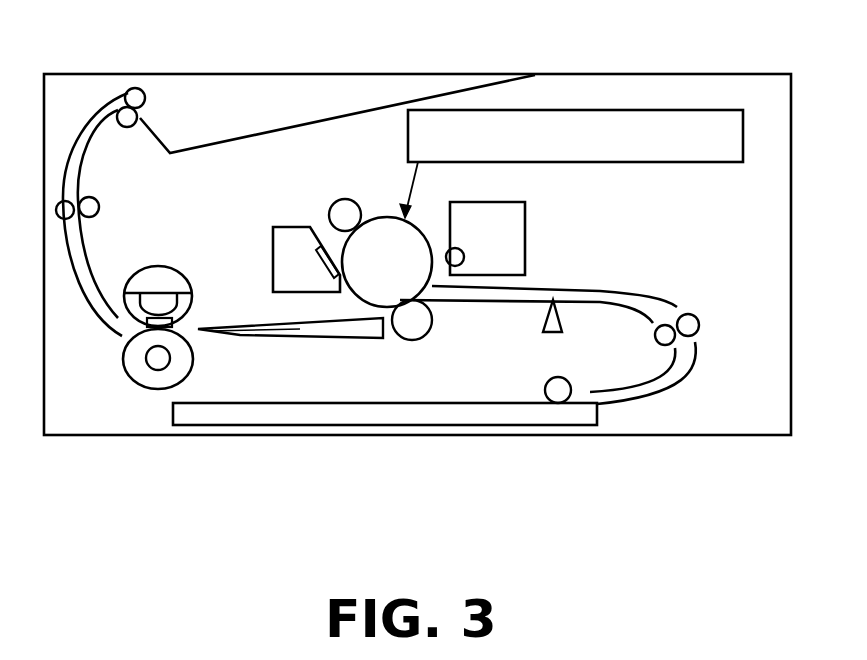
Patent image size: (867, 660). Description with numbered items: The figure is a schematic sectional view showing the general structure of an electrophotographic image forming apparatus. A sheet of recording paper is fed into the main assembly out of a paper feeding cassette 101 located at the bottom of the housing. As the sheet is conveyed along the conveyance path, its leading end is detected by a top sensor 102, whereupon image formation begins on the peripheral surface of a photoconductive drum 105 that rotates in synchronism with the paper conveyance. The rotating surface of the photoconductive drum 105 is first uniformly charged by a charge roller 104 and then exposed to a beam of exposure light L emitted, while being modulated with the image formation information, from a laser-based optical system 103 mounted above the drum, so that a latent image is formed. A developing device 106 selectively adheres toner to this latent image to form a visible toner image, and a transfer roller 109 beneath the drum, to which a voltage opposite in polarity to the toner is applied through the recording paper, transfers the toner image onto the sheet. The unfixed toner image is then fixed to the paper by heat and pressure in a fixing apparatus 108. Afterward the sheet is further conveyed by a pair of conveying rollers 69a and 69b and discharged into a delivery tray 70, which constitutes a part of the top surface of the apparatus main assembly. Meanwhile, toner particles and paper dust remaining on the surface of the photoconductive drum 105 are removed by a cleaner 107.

The delivery tray 70 is at (277, 130).
The conveying roller 69a is at (72, 223).
The conveying roller 69b is at (93, 200).
The paper feeding cassette 101 is at (397, 420).
The top sensor 102 is at (543, 323).
The laser-based optical system 103 is at (653, 125).
The charge roller 104 is at (342, 213).
The photoconductive drum 105 is at (383, 235).
The developing device 106 is at (512, 240).
The cleaner 107 is at (290, 267).
The fixing apparatus 108 is at (138, 367).
The transfer roller 109 is at (413, 327).
The exposure light L is at (420, 180).